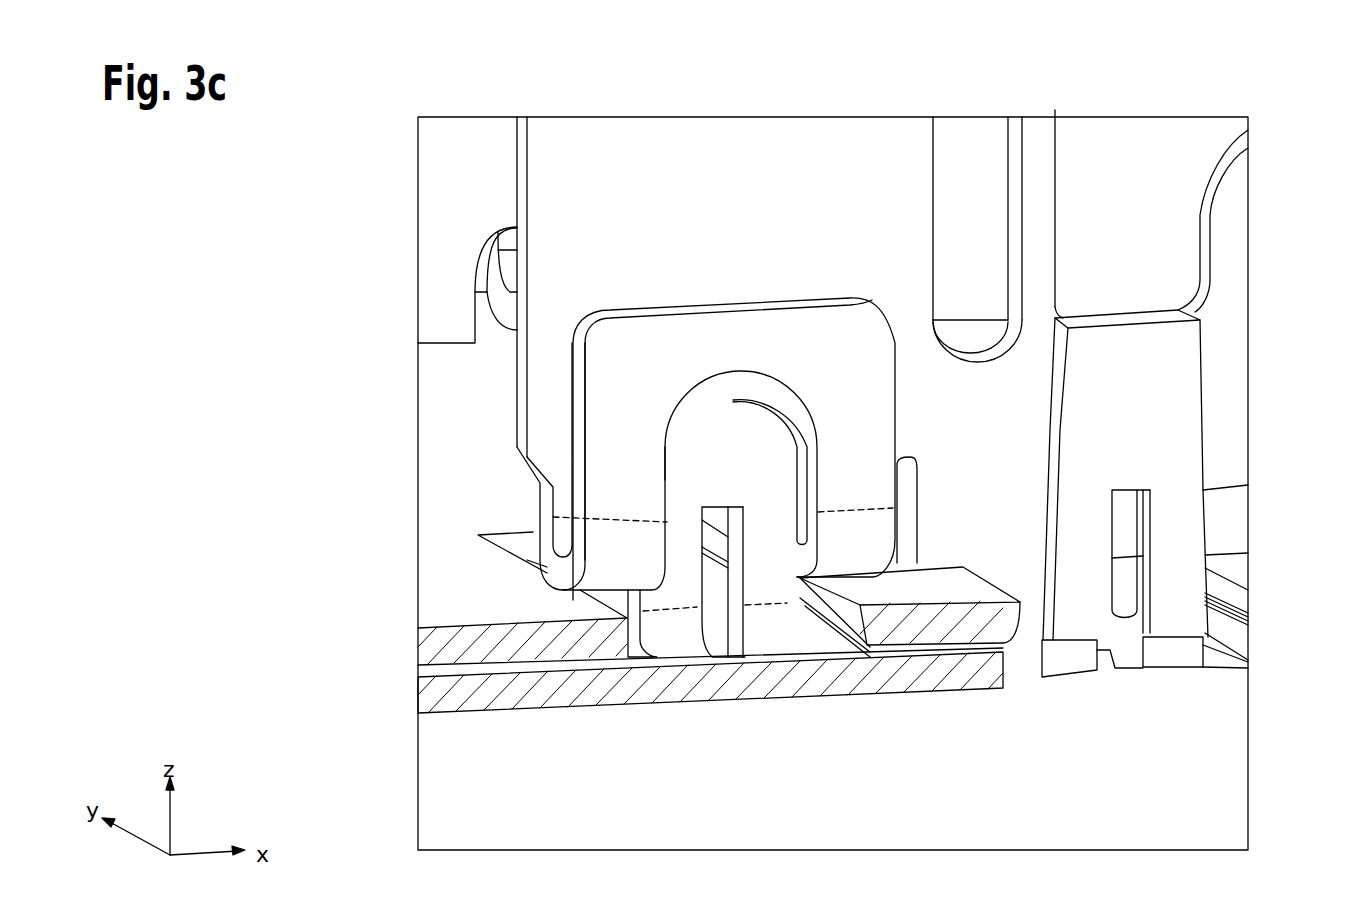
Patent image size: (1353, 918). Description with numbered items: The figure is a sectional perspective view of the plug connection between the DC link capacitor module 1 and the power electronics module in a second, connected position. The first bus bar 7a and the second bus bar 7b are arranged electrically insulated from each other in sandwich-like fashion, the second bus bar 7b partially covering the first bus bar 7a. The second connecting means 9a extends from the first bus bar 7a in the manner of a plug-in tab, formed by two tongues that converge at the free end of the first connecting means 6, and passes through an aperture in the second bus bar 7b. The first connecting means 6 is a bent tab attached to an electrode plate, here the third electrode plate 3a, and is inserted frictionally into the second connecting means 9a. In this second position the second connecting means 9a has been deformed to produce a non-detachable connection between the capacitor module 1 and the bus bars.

The DC link capacitor module 1 is at (957, 543).
The third electrode plate 3a is at (1007, 547).
The first connecting means 6 is at (617, 490).
The first bus bar 7a is at (437, 697).
The second bus bar 7b is at (437, 648).
The second connecting means 9a is at (765, 543).